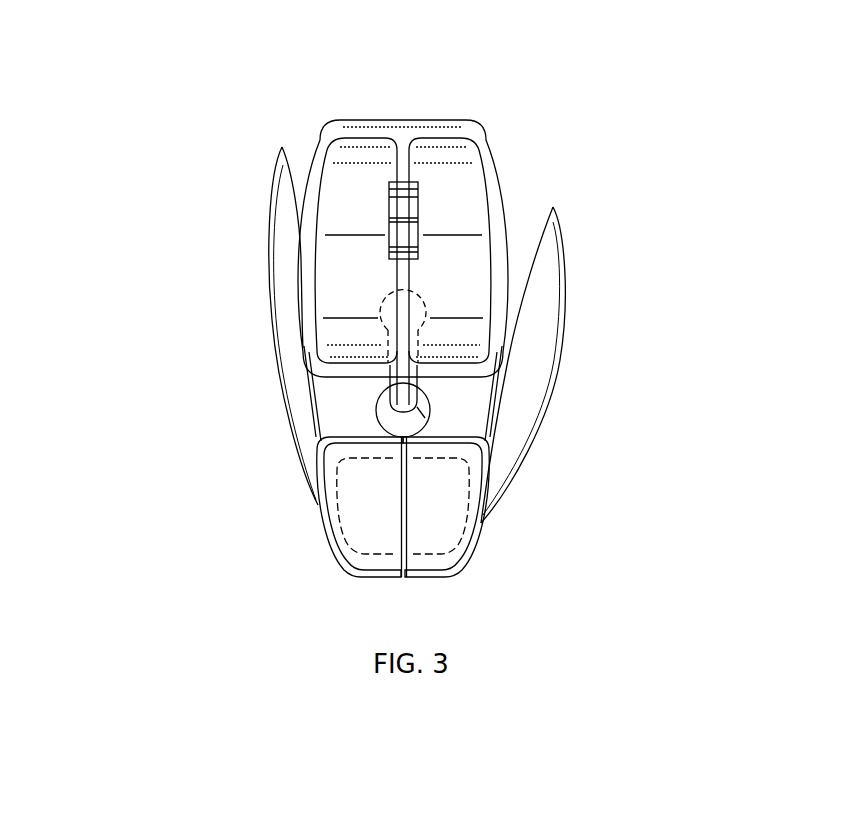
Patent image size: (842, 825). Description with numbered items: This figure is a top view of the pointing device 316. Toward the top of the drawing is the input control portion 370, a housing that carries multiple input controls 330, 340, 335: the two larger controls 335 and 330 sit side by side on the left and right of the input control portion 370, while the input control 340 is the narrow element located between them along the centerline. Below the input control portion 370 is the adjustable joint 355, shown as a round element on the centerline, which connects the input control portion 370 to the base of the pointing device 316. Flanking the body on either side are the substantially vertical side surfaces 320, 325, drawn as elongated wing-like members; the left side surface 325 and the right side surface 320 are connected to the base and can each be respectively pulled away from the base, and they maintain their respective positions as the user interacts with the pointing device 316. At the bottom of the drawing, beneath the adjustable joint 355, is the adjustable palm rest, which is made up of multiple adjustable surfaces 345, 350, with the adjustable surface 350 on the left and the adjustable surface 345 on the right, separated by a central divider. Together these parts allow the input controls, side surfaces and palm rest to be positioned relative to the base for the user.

The pointing device 316 is at (172, 102).
The substantially vertical side surface 320 is at (567, 278).
The substantially vertical side surface 325 is at (270, 285).
The input control 330 is at (470, 186).
The input control 335 is at (332, 181).
The input control 340 is at (411, 205).
The adjustable surface 345 is at (452, 528).
The adjustable surface 350 is at (350, 517).
The adjustable joint 355 is at (432, 403).
The input control portion 370 is at (380, 115).